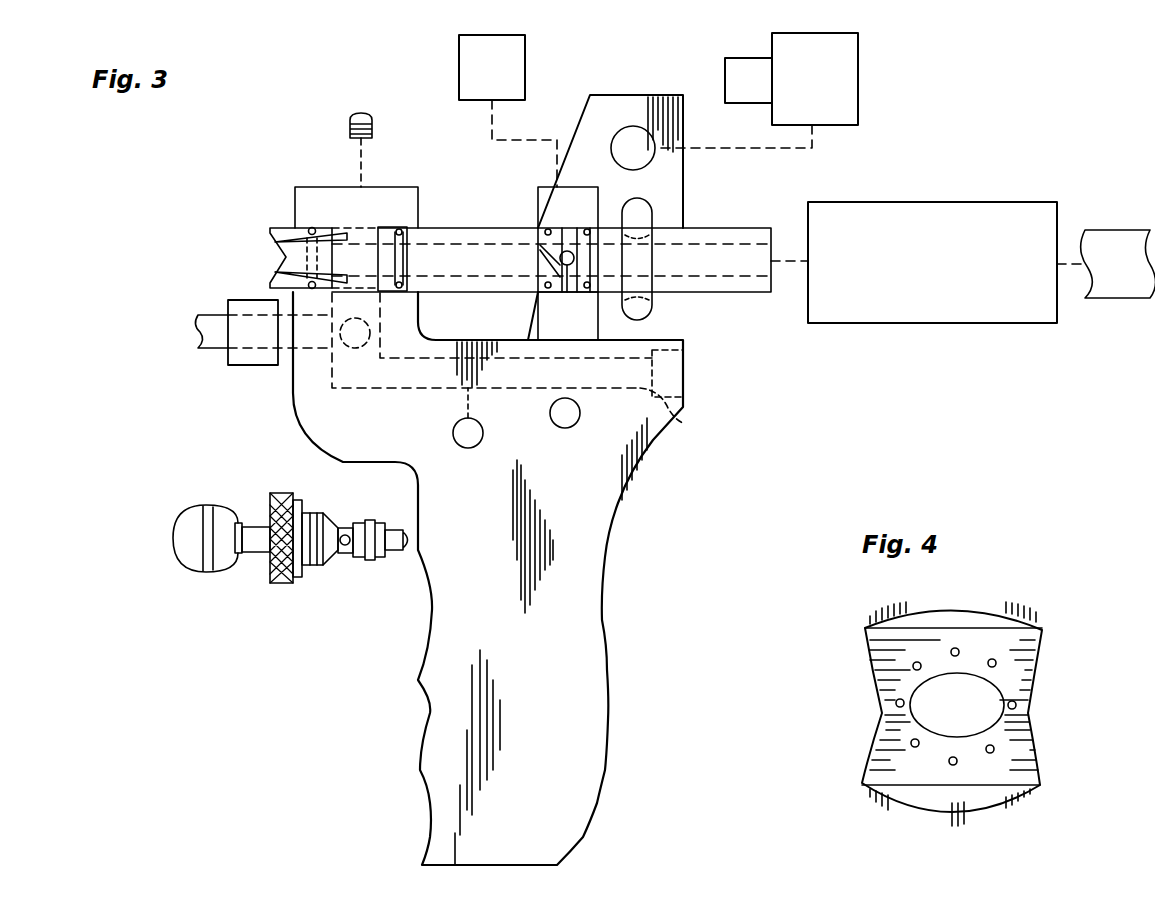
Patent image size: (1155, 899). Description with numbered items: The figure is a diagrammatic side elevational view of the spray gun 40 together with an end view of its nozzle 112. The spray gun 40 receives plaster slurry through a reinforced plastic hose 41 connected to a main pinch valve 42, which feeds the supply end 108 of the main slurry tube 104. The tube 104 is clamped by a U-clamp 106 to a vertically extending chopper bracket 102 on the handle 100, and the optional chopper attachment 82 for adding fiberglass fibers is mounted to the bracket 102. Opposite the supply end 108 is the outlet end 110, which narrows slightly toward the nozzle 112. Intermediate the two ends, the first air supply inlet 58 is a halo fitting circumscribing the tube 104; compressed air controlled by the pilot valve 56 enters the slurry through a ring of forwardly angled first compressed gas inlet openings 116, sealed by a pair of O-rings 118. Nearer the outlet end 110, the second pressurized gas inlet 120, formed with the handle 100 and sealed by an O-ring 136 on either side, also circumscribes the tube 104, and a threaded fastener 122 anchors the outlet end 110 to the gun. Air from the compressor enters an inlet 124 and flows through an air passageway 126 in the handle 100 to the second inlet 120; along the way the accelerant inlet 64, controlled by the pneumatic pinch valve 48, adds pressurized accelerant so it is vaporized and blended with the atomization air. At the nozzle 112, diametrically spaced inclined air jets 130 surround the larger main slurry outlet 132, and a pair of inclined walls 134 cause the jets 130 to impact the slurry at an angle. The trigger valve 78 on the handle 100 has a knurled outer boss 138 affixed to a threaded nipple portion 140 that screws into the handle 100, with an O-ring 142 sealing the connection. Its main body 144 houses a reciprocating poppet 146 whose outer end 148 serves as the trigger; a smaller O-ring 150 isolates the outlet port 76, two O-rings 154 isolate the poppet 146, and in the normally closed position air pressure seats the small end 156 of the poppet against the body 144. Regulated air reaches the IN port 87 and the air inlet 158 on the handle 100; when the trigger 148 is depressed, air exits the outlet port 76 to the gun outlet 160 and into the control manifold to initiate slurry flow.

In FIG. 3, the spray gun 40 is at (180, 245).
In FIG. 3, the reinforced plastic hose 41 is at (1120, 240).
In FIG. 3, the main pinch valve 42 is at (946, 274).
In FIG. 3, the pneumatic pinch valve 48 is at (245, 357).
In FIG. 3, the pilot valve 56 is at (507, 80).
In FIG. 3, the first air supply inlet 58 is at (550, 187).
In FIG. 3, the accelerant inlet 64 is at (492, 340).
In FIG. 3, the outlet port 76 is at (345, 546).
In FIG. 3, the trigger valve 78 is at (273, 548).
In FIG. 3, the chopper attachment 82 is at (829, 88).
In FIG. 3, the IN port 87 is at (388, 552).
In FIG. 3, the handle 100 is at (583, 692).
In FIG. 3, the chopper bracket 102 is at (683, 177).
In FIG. 3, the main slurry tube 104 is at (706, 296).
In FIG. 3, the U-clamp 106 is at (643, 215).
In FIG. 3, the supply end 108 is at (775, 292).
In FIG. 3, the outlet end 110 is at (257, 227).
In FIG. 3, the nozzle 112 is at (270, 283).
In FIG. 4, the nozzle 112 is at (843, 642).
In FIG. 3, the first compressed gas inlet openings 116 is at (568, 266).
In FIG. 3, the O-rings 118 is at (546, 228).
In FIG. 3, the second pressurized gas inlet 120 is at (376, 187).
In FIG. 3, the threaded fastener 122 is at (358, 110).
In FIG. 3, the inlet 124 is at (685, 388).
In FIG. 3, the air passageway 126 is at (668, 418).
In FIG. 3, the air jets 130 is at (307, 227).
In FIG. 4, the air jets 130 is at (996, 660).
In FIG. 3, the main slurry outlet 132 is at (270, 240).
In FIG. 4, the main slurry outlet 132 is at (982, 730).
In FIG. 4, the inclined walls 134 is at (876, 650).
In FIG. 3, the O-ring 136 is at (312, 227).
In FIG. 3, the knurled outer boss 138 is at (272, 583).
In FIG. 3, the threaded nipple portion 140 is at (312, 566).
In FIG. 3, the O-ring 142 is at (296, 496).
In FIG. 3, the main body 144 is at (333, 566).
In FIG. 3, the poppet 146 is at (256, 527).
In FIG. 3, the outer end 148 is at (176, 548).
In FIG. 3, the smaller O-ring 150 is at (366, 520).
In FIG. 3, the O-rings 154 is at (236, 523).
In FIG. 3, the small end 156 is at (418, 545).
In FIG. 3, the air inlet 158 is at (576, 428).
In FIG. 3, the gun outlet 160 is at (455, 425).